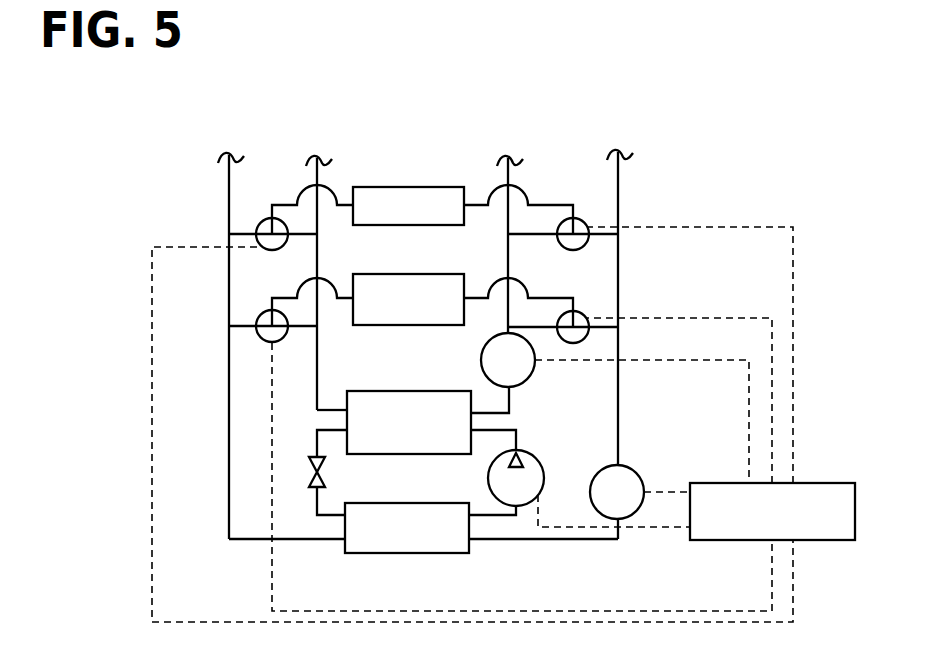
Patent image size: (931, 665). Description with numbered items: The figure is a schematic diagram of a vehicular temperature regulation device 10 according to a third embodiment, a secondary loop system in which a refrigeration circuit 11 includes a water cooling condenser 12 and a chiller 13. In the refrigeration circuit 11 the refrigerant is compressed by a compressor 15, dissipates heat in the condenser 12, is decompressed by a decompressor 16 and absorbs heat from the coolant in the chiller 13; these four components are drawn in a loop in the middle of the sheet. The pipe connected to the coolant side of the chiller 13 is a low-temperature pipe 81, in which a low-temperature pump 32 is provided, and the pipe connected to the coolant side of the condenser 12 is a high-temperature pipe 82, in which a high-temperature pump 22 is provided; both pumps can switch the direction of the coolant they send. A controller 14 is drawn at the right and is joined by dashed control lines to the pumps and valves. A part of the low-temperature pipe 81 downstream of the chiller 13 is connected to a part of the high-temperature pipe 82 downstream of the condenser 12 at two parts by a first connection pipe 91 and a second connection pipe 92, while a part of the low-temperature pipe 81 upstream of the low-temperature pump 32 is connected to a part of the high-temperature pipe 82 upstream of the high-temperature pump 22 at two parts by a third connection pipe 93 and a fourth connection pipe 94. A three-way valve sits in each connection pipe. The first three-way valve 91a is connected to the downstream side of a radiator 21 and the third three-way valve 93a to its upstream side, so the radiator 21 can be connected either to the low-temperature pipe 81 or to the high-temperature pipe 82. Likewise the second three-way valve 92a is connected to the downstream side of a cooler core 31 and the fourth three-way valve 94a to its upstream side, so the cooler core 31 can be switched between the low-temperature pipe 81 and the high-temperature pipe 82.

The vehicular temperature regulation device 10 is at (732, 185).
The refrigeration circuit 11 is at (490, 521).
The condenser 12 is at (365, 391).
The chiller 13 is at (432, 553).
The controller 14 is at (825, 483).
The compressor 15 is at (533, 452).
The decompressor 16 is at (310, 466).
The radiator 21 is at (433, 187).
The high-temperature pump 22 is at (481, 352).
The cooler core 31 is at (428, 274).
The low-temperature pump 32 is at (638, 468).
The low-temperature pipe 81 is at (297, 542).
The high-temperature pipe 82 is at (316, 385).
The first connection pipe 91 is at (245, 236).
The first three-way valve 91a is at (263, 221).
The second connection pipe 92 is at (243, 328).
The second three-way valve 92a is at (265, 342).
The third connection pipe 93 is at (597, 238).
The third three-way valve 93a is at (585, 222).
The fourth connection pipe 94 is at (597, 332).
The fourth three-way valve 94a is at (585, 315).